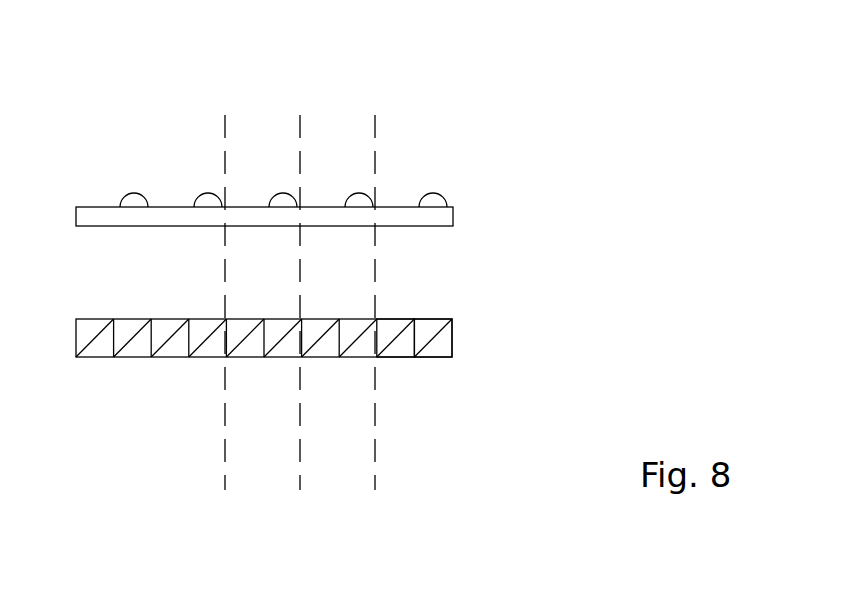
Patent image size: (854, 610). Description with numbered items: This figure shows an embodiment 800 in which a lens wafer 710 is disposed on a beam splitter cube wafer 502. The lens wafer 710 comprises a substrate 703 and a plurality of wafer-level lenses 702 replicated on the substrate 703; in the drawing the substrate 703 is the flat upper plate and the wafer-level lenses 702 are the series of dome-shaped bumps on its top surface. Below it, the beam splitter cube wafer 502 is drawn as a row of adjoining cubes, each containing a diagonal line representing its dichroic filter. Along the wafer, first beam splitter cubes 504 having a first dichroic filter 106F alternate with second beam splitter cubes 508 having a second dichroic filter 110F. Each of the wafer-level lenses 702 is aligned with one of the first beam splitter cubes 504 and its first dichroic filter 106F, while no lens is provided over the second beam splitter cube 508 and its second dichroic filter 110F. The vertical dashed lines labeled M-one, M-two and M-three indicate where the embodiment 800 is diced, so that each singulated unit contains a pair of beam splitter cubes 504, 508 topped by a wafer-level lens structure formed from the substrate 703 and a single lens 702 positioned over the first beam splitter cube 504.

The embodiment 800 is at (453, 57).
The lens wafer 710 is at (466, 224).
The wafer-level lenses 702 is at (436, 194).
The substrate 703 is at (76, 213).
The beam splitter cube wafer 502 is at (462, 339).
The second beam splitter cube 508 is at (397, 319).
The first beam splitter cube 504 is at (433, 319).
The first dichroic filter 106F is at (440, 338).
The second dichroic filter 110F is at (397, 335).